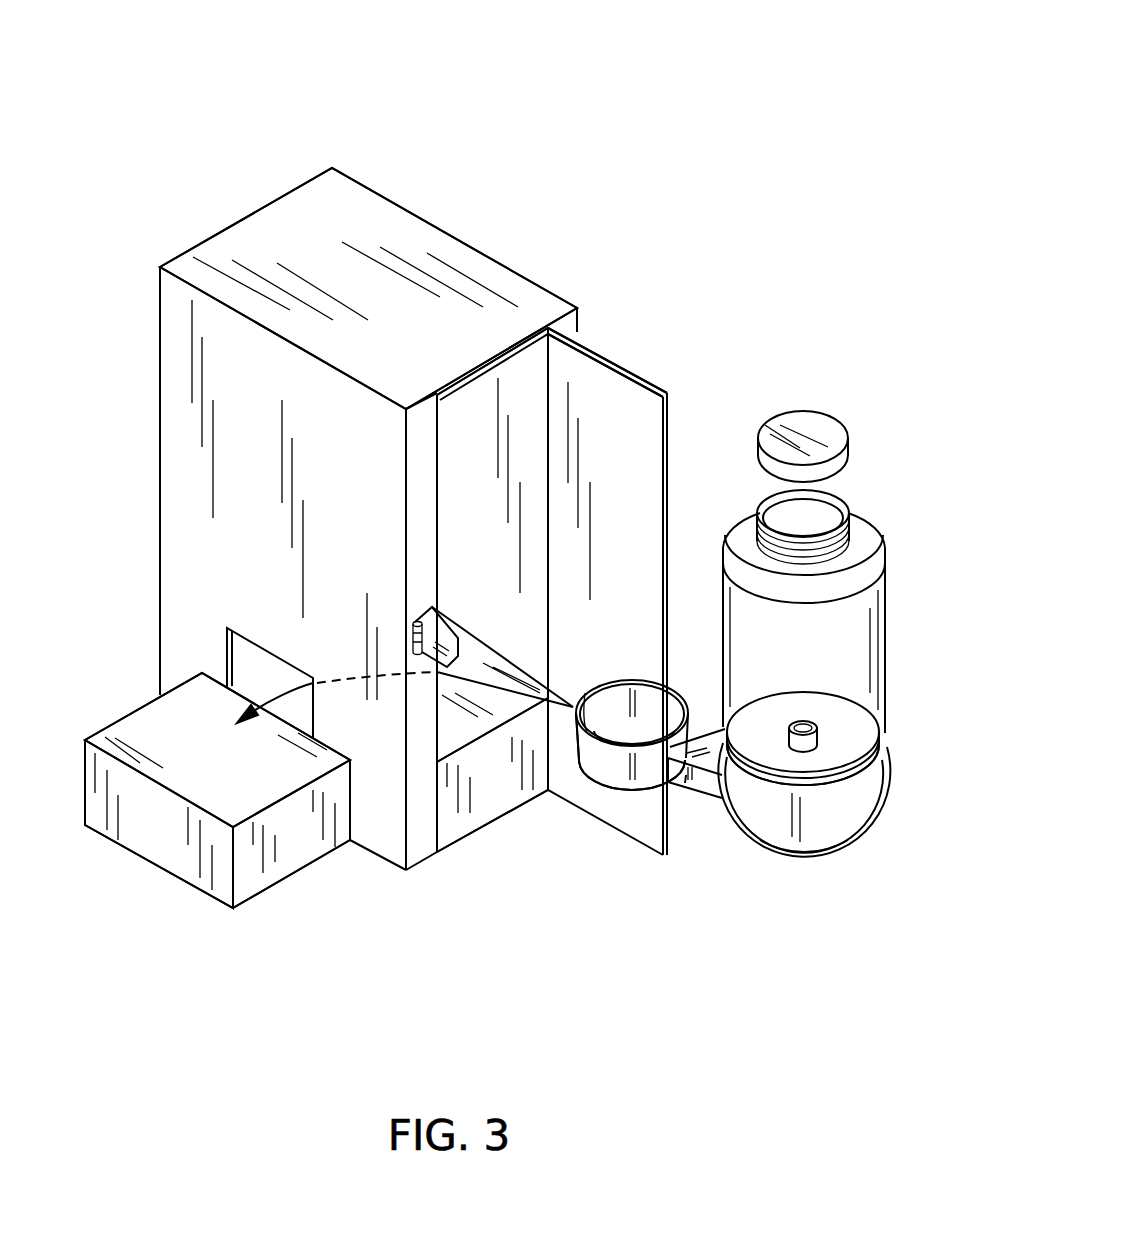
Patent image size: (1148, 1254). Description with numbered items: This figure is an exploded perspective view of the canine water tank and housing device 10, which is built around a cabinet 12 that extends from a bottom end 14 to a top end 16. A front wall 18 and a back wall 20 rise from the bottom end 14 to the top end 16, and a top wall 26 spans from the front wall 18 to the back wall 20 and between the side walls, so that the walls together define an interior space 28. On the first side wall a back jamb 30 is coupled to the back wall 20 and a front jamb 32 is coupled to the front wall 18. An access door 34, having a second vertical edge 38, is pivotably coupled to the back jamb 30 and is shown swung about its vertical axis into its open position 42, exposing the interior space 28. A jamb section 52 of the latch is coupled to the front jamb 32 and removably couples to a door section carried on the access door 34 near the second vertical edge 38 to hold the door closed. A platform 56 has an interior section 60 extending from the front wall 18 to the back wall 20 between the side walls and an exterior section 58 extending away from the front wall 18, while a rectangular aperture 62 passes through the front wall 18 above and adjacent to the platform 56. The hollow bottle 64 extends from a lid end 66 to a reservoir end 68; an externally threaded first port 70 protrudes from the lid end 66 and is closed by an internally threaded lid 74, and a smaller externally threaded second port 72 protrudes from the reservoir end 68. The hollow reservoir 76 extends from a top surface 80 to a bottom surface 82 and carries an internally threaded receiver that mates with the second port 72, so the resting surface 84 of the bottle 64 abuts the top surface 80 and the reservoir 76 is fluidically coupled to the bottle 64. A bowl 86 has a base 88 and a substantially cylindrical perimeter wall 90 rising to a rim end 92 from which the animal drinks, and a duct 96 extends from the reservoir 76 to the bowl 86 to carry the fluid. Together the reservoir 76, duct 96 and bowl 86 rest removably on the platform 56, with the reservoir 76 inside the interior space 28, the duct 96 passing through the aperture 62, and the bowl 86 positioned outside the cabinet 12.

The canine water tank and housing device 10 is at (725, 105).
The cabinet 12 is at (511, 228).
The bottom end 14 is at (423, 908).
The top end 16 is at (378, 150).
The front wall 18 is at (200, 513).
The back wall 20 is at (512, 398).
The top wall 26 is at (283, 233).
The interior space 28 is at (528, 477).
The back jamb 30 is at (572, 330).
The front jamb 32 is at (420, 435).
The access door 34 is at (645, 490).
The second vertical edge 38 is at (665, 590).
The open position 42 is at (540, 945).
The jamb section 52 is at (399, 589).
The platform 56 is at (465, 800).
The exterior section 58 is at (260, 855).
The interior section 60 is at (505, 778).
The rectangular aperture 62 is at (230, 665).
The bottle 64 is at (858, 633).
The lid end 66 is at (848, 522).
The reservoir end 68 is at (845, 780).
The first port 70 is at (847, 537).
The second port 72 is at (807, 727).
The lid 74 is at (800, 433).
The reservoir 76 is at (830, 833).
The top surface 80 is at (783, 777).
The bottom surface 82 is at (802, 858).
The resting surface 84 is at (873, 763).
The bowl 86 is at (653, 710).
The base 88 is at (628, 737).
The perimeter wall 90 is at (618, 775).
The rim end 92 is at (578, 720).
The duct 96 is at (700, 783).